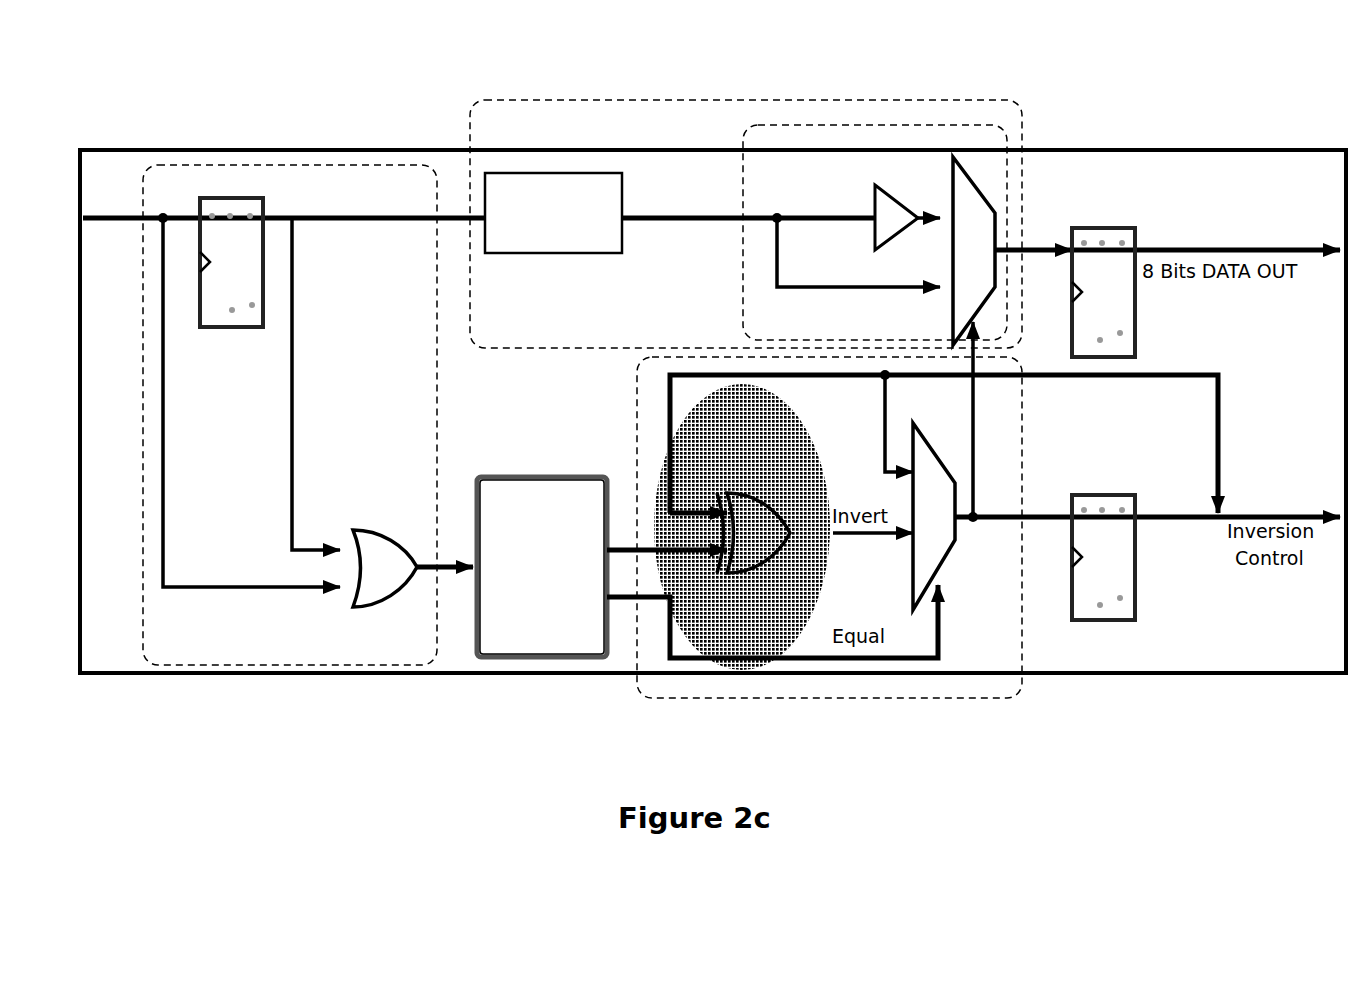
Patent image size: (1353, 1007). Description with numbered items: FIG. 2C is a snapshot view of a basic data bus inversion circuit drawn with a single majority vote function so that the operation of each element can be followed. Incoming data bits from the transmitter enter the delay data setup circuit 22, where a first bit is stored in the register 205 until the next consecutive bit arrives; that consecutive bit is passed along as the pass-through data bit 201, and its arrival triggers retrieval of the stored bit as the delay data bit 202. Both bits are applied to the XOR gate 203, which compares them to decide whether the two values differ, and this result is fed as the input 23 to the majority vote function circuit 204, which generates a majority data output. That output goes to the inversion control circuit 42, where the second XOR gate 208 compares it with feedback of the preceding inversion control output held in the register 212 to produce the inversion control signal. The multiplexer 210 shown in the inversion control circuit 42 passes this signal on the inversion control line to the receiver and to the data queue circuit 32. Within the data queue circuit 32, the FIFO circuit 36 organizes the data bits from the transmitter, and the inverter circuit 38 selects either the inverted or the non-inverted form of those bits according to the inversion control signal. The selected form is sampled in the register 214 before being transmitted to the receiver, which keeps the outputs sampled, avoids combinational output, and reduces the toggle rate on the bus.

The delay data setup circuit 22 is at (273, 647).
The input to majority vote function circuit 23 is at (443, 560).
The data queue circuit 32 is at (683, 120).
The FIFO circuit 36 is at (595, 188).
The inverter circuit 38 is at (918, 135).
The inversion control circuit 42 is at (992, 685).
The pass-through data bit 201 is at (182, 590).
The delay data bit 202 is at (293, 452).
The XOR gate 203 is at (383, 603).
The majority vote function circuit 204 is at (548, 475).
The register 205 is at (237, 198).
The second XOR gate 208 is at (750, 550).
The multiplexer 210 is at (948, 540).
The register 212 is at (1082, 600).
The register 214 is at (1118, 228).